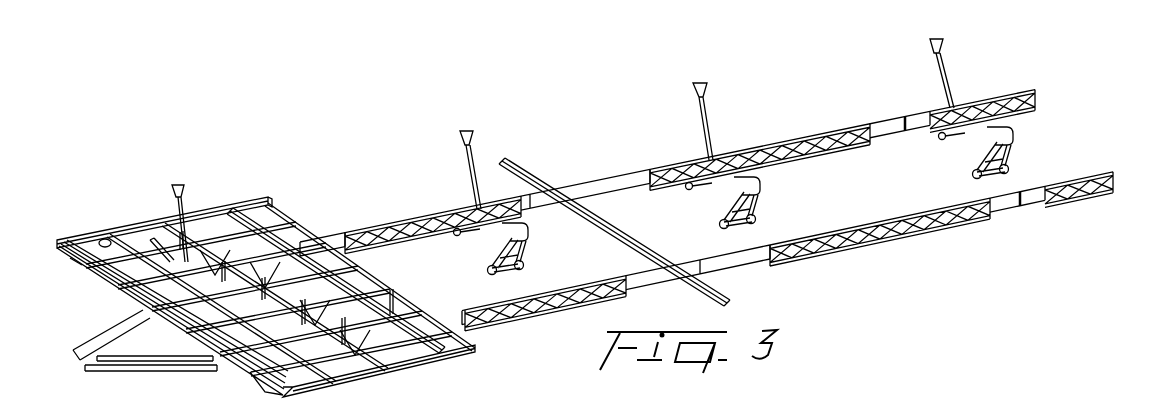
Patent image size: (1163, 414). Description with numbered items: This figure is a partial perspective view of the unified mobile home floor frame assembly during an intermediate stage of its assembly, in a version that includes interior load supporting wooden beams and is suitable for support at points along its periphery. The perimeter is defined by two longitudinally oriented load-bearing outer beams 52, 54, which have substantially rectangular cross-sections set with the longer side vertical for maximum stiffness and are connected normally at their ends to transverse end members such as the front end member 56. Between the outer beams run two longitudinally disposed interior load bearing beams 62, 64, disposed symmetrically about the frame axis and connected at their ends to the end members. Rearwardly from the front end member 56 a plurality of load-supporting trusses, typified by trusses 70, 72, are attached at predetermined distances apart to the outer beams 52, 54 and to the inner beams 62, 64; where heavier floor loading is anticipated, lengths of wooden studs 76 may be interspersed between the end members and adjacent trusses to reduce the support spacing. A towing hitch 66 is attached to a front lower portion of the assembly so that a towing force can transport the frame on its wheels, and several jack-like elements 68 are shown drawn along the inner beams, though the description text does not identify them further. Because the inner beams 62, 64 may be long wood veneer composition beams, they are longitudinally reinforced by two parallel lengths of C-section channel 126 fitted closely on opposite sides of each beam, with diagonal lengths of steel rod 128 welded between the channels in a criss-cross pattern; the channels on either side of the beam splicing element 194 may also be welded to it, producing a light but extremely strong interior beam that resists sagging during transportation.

The load-bearing outer beam 52 is at (430, 365).
The load-bearing outer beam 54 is at (253, 198).
The front end member 56 is at (224, 362).
The interior load bearing beam 62 is at (787, 277).
The interior load bearing beam 64 is at (627, 182).
The towing hitch 66 is at (125, 368).
The jack 68 is at (185, 200).
The load-supporting truss 70 is at (653, 245).
The load-supporting truss 72 is at (158, 247).
The wooden stud 76 is at (103, 243).
The C-section channel 126 is at (865, 250).
The steel rod 128 is at (957, 223).
The beam splicing element 194 is at (1030, 213).